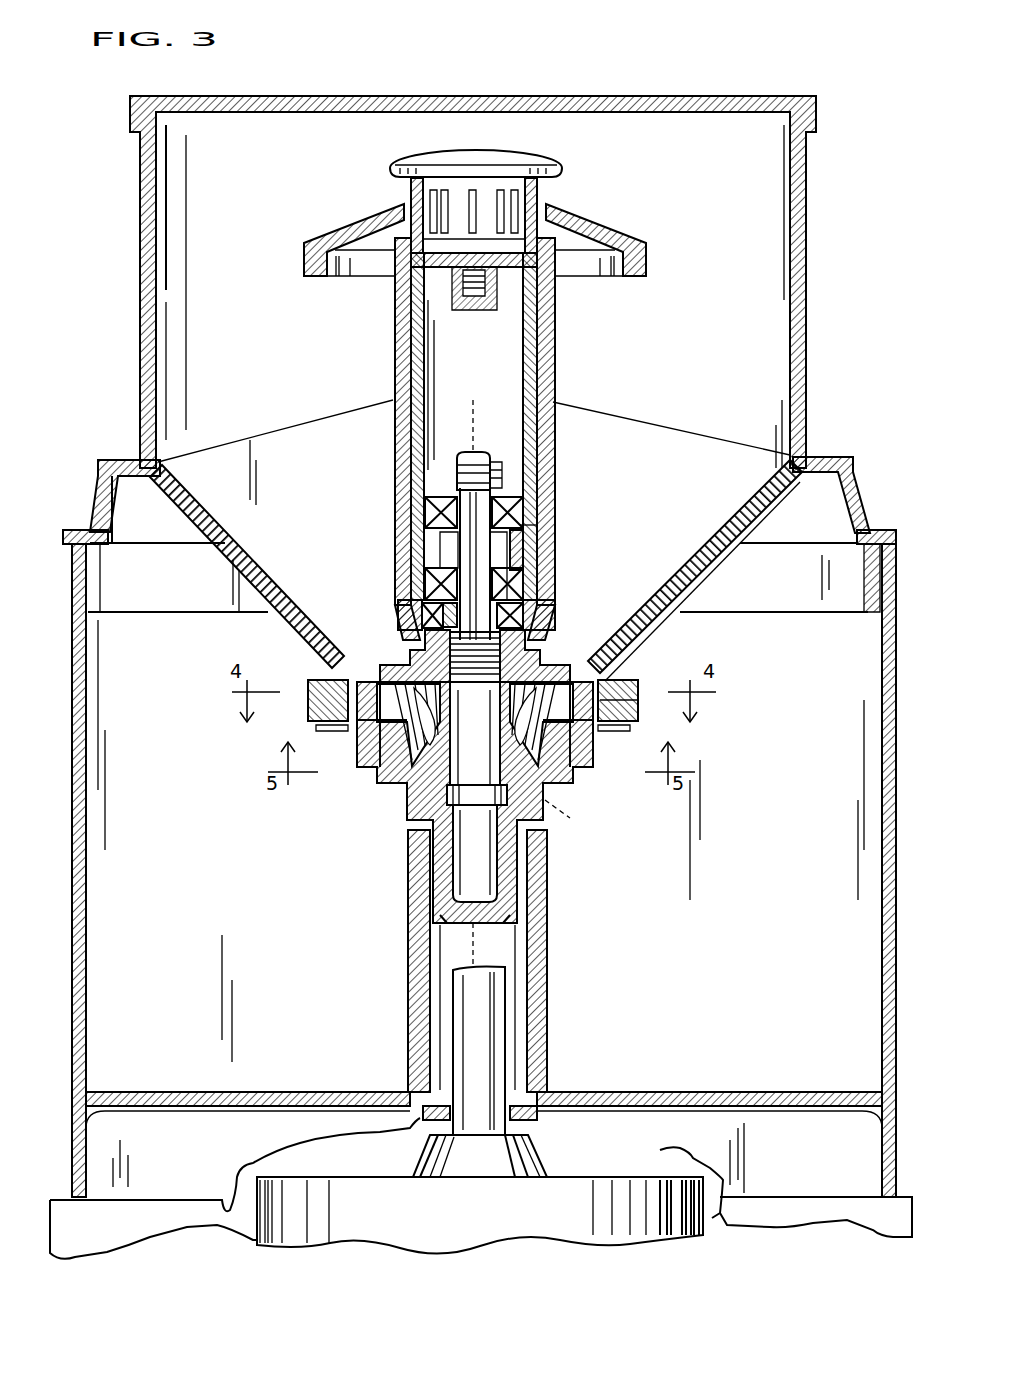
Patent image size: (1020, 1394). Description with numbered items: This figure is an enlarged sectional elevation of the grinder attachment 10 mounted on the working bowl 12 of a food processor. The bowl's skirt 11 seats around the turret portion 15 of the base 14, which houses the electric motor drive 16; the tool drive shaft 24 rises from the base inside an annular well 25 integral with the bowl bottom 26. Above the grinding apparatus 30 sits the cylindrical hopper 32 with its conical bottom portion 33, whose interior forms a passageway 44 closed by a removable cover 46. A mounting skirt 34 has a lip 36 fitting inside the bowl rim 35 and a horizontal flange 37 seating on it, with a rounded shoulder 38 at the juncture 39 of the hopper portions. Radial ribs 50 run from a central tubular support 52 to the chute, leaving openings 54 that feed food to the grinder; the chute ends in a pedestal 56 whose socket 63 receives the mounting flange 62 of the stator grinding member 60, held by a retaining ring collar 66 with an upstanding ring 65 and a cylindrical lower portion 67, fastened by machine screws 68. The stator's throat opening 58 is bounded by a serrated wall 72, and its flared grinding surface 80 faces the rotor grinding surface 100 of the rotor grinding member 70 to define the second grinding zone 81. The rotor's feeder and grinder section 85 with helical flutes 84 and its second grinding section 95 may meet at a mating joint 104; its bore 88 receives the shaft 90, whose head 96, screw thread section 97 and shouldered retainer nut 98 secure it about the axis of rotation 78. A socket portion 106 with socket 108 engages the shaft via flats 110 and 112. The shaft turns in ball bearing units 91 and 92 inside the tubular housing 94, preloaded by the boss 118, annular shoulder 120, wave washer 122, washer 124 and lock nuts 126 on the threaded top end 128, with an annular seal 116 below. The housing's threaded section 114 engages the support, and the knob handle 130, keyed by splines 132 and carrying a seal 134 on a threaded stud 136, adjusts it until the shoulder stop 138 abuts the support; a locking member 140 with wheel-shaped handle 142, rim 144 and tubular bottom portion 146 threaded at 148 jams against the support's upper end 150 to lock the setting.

The grinder attachment 10 is at (100, 366).
The skirt 11 is at (104, 1130).
The working bowl 12 is at (882, 790).
The base 14 is at (145, 1197).
The turret portion 15 is at (80, 1110).
The electric motor drive 16 is at (285, 1172).
The tool drive shaft 24 is at (520, 1042).
The annular well 25 is at (548, 982).
The bottom 26 is at (710, 1092).
The grinding apparatus 30 is at (298, 826).
The circular cylindrical hopper 32 is at (808, 270).
The truncated conical bottom portion 33 is at (686, 565).
The mounting skirt 34 is at (855, 440).
The rim 35 is at (893, 552).
The vertical cylindrical lip 36 is at (866, 605).
The horizontal flange 37 is at (878, 530).
The rounded annular shoulder 38 is at (850, 462).
The juncture 39 is at (780, 458).
The passageway 44 is at (653, 330).
The removable cover 46 is at (644, 96).
The radial strengthening and support ribs 50 is at (296, 416).
The central tubular support 52 is at (535, 505).
The openings 54 is at (406, 650).
The pedestal 56 is at (640, 662).
The central throat opening 58 is at (516, 690).
The stator grinding member 60 is at (580, 738).
The upper mounting flange 62 is at (320, 688).
The socket 63 is at (332, 676).
The upstanding ring 65 is at (632, 672).
The retaining ring collar 66 is at (640, 700).
The cylindrical lower portion 67 is at (580, 770).
The machine screws 68 is at (334, 733).
The rotor grinding member 70 is at (400, 790).
The truncated conical serrated wall 72 is at (546, 700).
The vertical axis of rotation 78 is at (478, 408).
The flared grinding surface 80 is at (365, 752).
The second grinding zone 81 is at (372, 772).
The helical flutes 84 is at (410, 690).
The feeder and grinder section 85 is at (520, 750).
The bore 88 is at (430, 812).
The shaft 90 is at (470, 547).
The upper ball bearing unit 91 is at (430, 518).
The lower ball bearing unit 92 is at (420, 575).
The tubular housing 94 is at (404, 437).
The second grinding section 95 is at (556, 775).
The head 96 is at (474, 805).
The screw thread section 97 is at (477, 754).
The shouldered retainer nut 98 is at (474, 693).
The rotor grinding surface 100 is at (397, 780).
The mating joint 104 is at (577, 819).
The socket portion 106 is at (516, 852).
The socket 108 is at (505, 872).
The flats 110 is at (480, 988).
The flats 112 is at (472, 872).
The externally screw-threaded section 114 is at (556, 395).
The annular seal 116 is at (560, 578).
The boss 118 is at (550, 560).
The annular shoulder 120 is at (545, 540).
The axial thrust wave washer 122 is at (525, 528).
The washer 124 is at (505, 462).
The lock nuts 126 is at (500, 455).
The threaded top end 128 is at (418, 456).
The knob handle 130 is at (522, 146).
The splines 132 is at (462, 190).
The seal 134 is at (470, 300).
The threaded stud 136 is at (488, 300).
The external shoulder stop 138 is at (415, 594).
The locking member 140 is at (305, 238).
The wheel-shaped handle 142 is at (332, 228).
The rim 144 is at (312, 280).
The tubular bottom portion 146 is at (396, 345).
The screw thread 148 is at (397, 362).
The upper end 150 is at (397, 370).